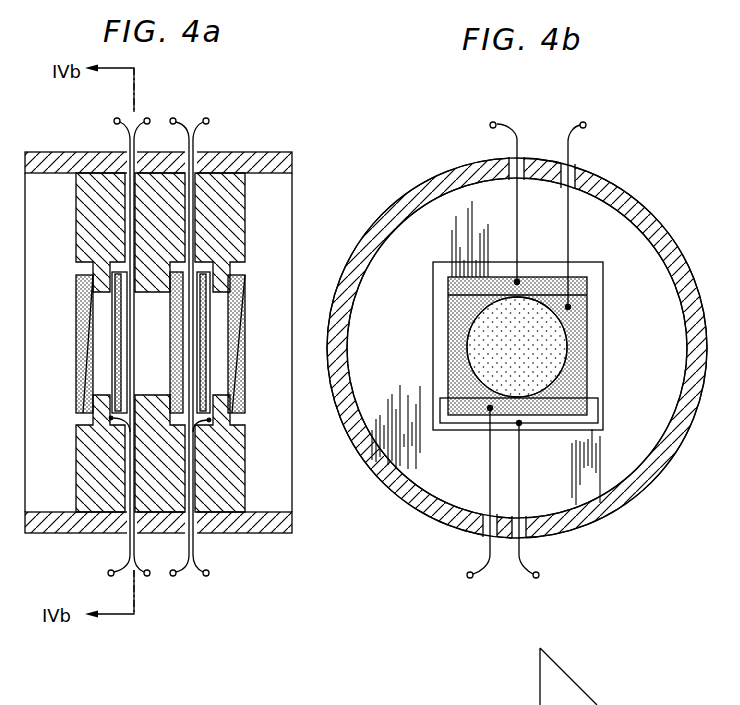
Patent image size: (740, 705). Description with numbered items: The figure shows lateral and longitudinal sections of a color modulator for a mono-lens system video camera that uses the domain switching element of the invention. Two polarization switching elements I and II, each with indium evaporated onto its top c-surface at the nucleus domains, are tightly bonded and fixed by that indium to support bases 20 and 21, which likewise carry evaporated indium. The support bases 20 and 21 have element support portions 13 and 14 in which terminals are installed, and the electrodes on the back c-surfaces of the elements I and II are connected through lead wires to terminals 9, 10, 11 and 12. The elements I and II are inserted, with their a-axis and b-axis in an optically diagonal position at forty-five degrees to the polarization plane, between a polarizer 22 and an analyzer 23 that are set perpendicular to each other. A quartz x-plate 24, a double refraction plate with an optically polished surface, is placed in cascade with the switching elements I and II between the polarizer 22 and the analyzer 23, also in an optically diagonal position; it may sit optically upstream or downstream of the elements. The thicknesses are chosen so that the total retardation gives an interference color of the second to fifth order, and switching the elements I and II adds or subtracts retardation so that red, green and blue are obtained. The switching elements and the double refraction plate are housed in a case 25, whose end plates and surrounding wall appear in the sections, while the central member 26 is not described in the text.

In FIG. 4a, the lead wire and terminal 9 is at (114, 120).
In FIG. 4b, the lead wire and terminal 9 is at (495, 122).
In FIG. 4a, the lead wire and terminal 10 is at (173, 118).
In FIG. 4b, the lead wire and terminal 10 is at (585, 123).
In FIG. 4a, the lead wire and terminal 11 is at (172, 576).
In FIG. 4b, the lead wire and terminal 11 is at (470, 578).
In FIG. 4a, the terminal 12 is at (108, 572).
In FIG. 4b, the terminal 12 is at (538, 578).
In FIG. 4a, the element support portion 13 is at (108, 418).
In FIG. 4a, the element support portion 14 is at (212, 420).
In FIG. 4a, the support base 20 is at (90, 225).
In FIG. 4b, the support base 20 is at (640, 265).
In FIG. 4a, the support base 21 is at (234, 226).
In FIG. 4a, the polarizer 22 is at (84, 303).
In FIG. 4a, the analyzer 23 is at (236, 308).
In FIG. 4a, the quartz x-plate 24 is at (172, 330).
In FIG. 4a, the case 25 is at (293, 162).
In FIG. 4b, the case 25 is at (628, 210).
In FIG. 4a, the central support member 26 is at (167, 195).
In FIG. 4a, the polarization switching element I is at (122, 368).
In FIG. 4b, the polarization switching element I is at (578, 372).
In FIG. 4a, the polarization switching element II is at (206, 368).